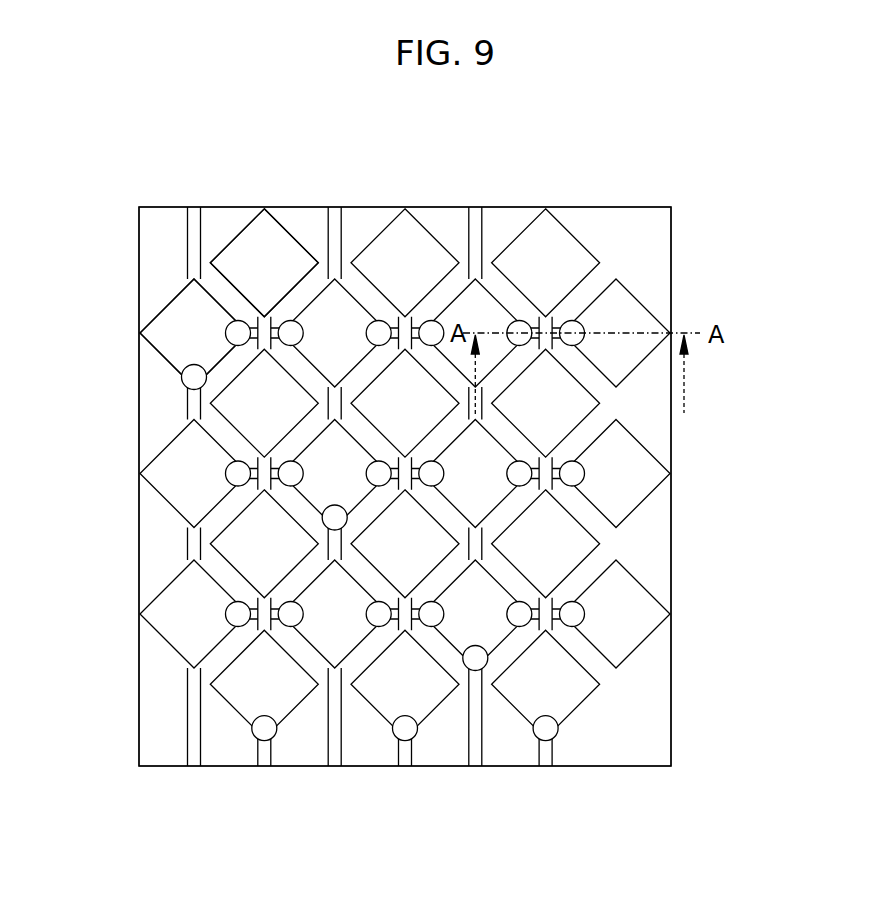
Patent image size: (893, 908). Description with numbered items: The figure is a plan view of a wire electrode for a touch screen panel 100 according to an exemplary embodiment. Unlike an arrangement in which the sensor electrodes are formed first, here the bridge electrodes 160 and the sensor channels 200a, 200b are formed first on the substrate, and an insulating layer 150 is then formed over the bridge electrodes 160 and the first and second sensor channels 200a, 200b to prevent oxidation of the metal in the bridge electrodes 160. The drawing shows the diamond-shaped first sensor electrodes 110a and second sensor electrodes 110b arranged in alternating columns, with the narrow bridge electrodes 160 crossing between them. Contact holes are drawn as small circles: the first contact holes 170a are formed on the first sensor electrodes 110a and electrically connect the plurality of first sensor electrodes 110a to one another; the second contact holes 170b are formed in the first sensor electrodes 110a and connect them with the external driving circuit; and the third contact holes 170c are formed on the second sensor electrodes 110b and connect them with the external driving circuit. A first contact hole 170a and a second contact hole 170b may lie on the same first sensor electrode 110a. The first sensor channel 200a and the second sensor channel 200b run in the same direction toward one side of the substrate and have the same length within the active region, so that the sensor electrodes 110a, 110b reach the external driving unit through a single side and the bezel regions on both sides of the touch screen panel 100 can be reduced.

The touch screen panel 100 is at (602, 206).
The first sensor electrode 110a is at (177, 305).
The second sensor electrode 110b is at (259, 238).
The insulating layer 150 is at (653, 250).
The bridge electrode 160 is at (277, 312).
The first contact hole 170a is at (224, 334).
The second contact hole 170b is at (185, 387).
The third contact hole 170c is at (558, 729).
The first sensor channel 200a is at (187, 727).
The second sensor channel 200b is at (257, 752).